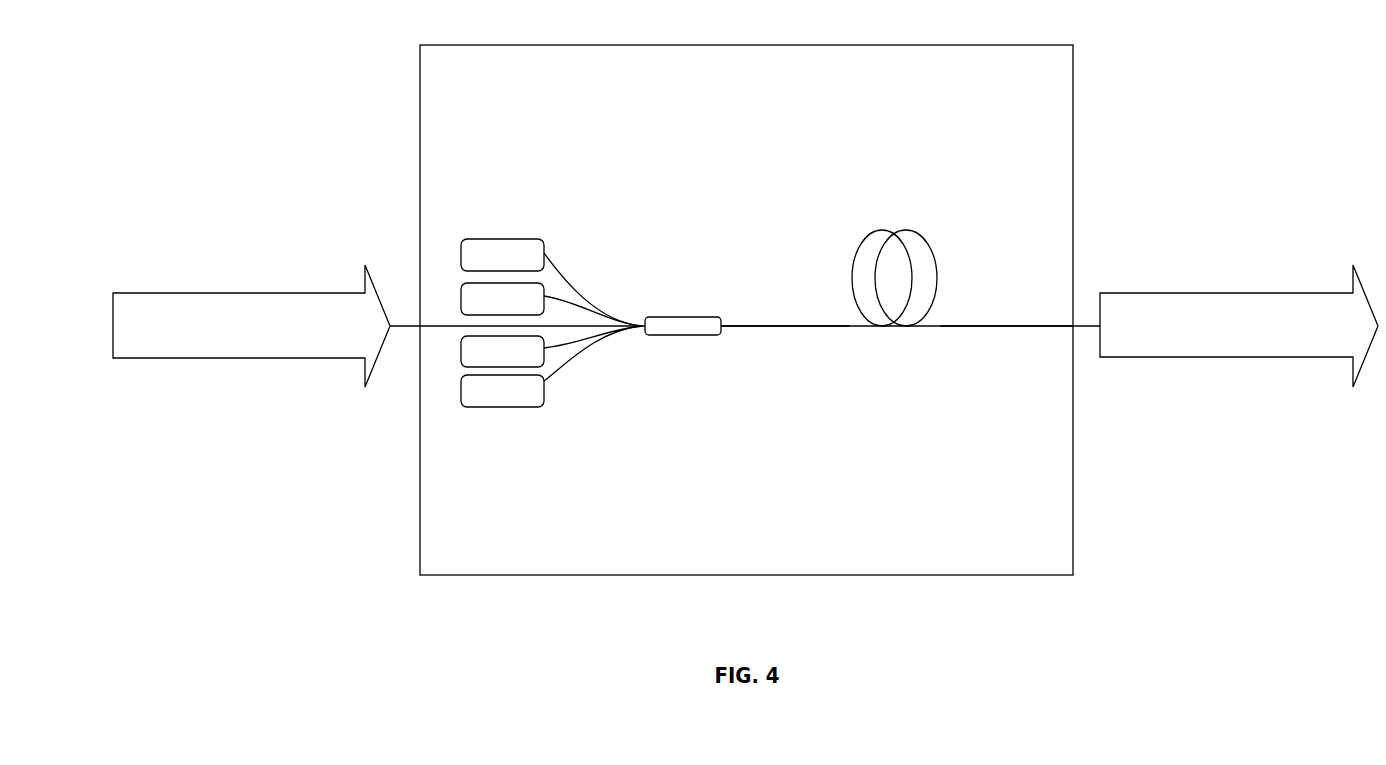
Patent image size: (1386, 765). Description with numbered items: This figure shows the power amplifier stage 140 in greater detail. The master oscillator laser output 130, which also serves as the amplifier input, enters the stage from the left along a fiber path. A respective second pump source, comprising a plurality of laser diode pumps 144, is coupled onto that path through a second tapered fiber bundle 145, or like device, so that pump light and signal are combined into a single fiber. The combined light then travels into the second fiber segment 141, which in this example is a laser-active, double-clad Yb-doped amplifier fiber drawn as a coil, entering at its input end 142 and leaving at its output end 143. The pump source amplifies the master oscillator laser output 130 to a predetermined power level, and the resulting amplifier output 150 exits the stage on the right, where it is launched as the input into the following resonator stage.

The master oscillator laser output 130 is at (216, 280).
The power amplifier stage 140 is at (824, 74).
The second fiber segment 141 is at (961, 222).
The input end 142 is at (768, 408).
The output end 143 is at (990, 408).
The laser diode pumps 144 is at (523, 222).
The second tapered fiber bundle 145 is at (704, 284).
The amplifier output 150 is at (1246, 280).